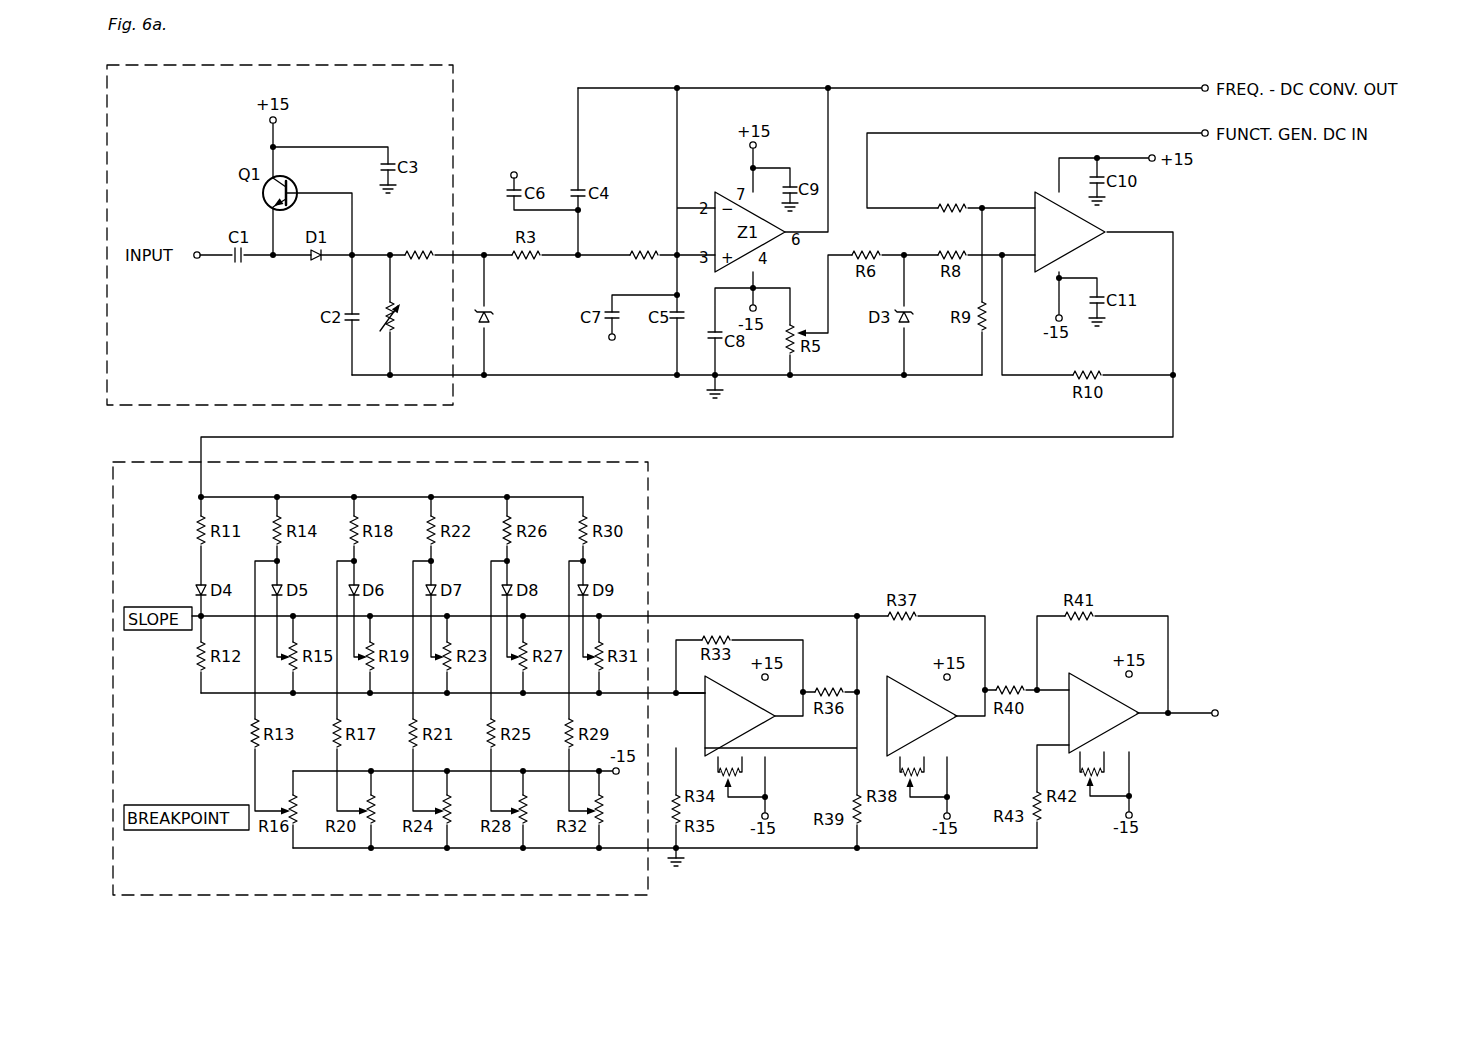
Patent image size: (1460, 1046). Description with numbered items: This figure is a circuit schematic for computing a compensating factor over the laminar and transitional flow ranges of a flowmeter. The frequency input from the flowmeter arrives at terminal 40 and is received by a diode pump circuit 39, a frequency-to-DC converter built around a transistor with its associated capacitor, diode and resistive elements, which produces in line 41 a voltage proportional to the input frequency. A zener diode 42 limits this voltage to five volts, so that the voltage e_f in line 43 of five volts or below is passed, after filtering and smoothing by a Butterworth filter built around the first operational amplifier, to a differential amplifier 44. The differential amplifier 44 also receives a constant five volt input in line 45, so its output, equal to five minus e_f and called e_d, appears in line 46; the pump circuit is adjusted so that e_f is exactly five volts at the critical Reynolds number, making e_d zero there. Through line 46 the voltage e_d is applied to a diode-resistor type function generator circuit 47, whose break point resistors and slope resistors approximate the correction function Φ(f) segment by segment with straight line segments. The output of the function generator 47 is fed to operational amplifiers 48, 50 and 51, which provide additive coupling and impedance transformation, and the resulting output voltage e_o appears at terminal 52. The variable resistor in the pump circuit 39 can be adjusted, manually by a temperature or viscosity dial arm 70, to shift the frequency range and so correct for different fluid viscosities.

The diode pump circuit 39 is at (462, 87).
The terminal 40 is at (197, 250).
The line 41 is at (436, 252).
The zener diode 42 is at (487, 324).
The line 43 is at (605, 258).
The differential amplifier 44 is at (1041, 192).
The line 45 is at (917, 207).
The line 46 is at (1173, 312).
The diode-resistor function generator circuit 47 is at (660, 517).
The operational amplifier 48 is at (705, 714).
The operational amplifier 50 is at (907, 683).
The operational amplifier 51 is at (1087, 680).
The terminal 52 is at (1215, 717).
The temperature or viscosity dial arm 70 is at (382, 313).